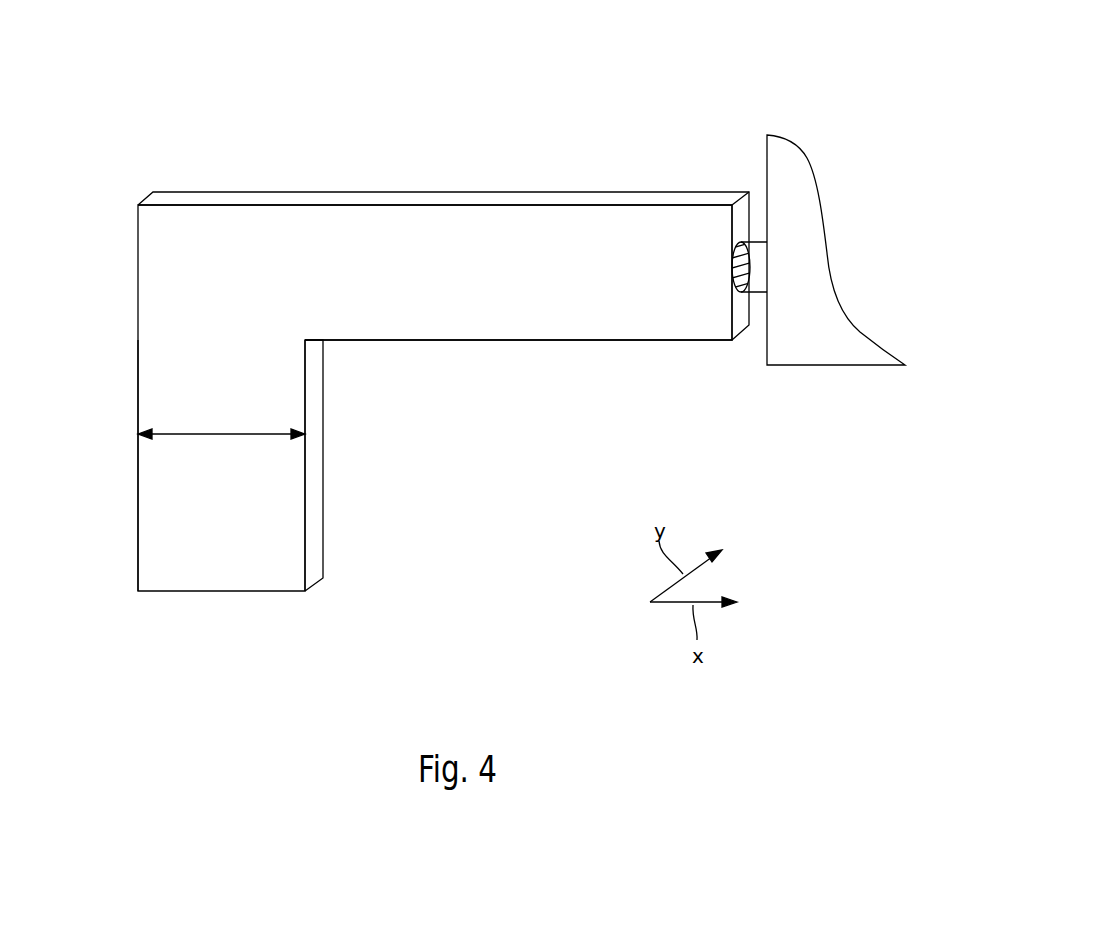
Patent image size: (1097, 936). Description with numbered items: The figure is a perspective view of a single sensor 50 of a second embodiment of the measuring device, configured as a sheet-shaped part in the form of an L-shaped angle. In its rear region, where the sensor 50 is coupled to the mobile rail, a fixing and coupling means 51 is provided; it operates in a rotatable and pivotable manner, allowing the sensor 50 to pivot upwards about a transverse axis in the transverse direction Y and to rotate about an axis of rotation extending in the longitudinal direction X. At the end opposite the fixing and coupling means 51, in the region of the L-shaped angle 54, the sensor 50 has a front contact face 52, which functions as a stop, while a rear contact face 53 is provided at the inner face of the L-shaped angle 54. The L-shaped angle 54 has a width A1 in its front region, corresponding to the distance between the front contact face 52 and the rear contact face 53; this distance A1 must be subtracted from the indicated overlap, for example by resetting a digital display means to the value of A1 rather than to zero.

The sensor 50 is at (537, 94).
The fixing and coupling means 51 is at (757, 257).
The front contact face 52 is at (138, 473).
The rear contact face 53 is at (305, 472).
The L-shaped angle 54 is at (312, 150).
The width A1 is at (221, 430).